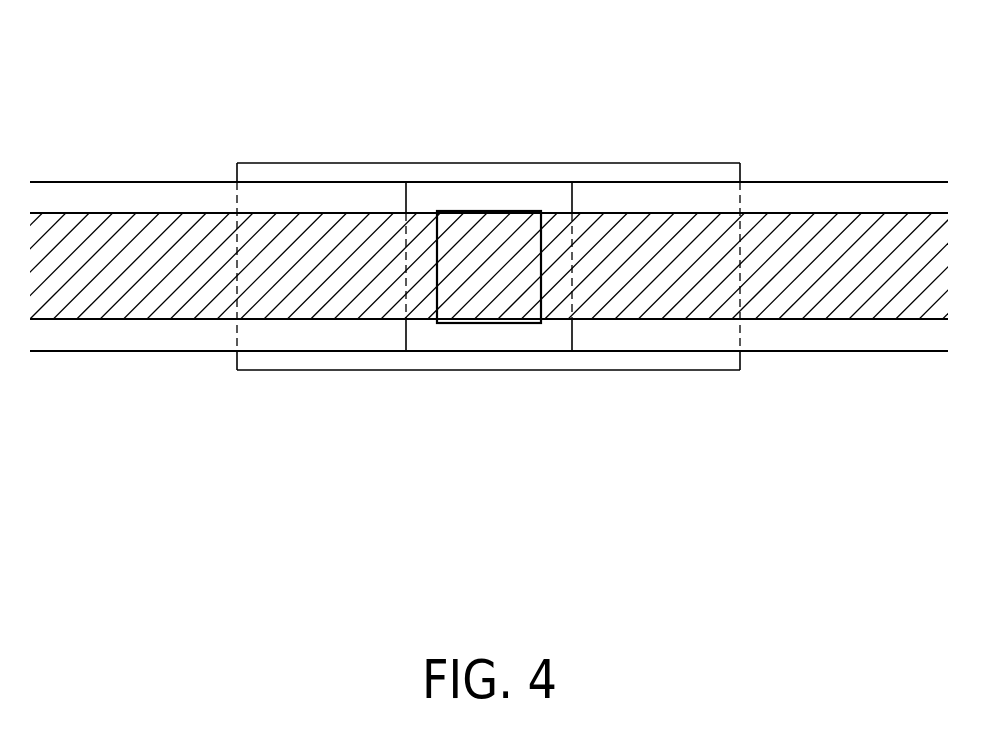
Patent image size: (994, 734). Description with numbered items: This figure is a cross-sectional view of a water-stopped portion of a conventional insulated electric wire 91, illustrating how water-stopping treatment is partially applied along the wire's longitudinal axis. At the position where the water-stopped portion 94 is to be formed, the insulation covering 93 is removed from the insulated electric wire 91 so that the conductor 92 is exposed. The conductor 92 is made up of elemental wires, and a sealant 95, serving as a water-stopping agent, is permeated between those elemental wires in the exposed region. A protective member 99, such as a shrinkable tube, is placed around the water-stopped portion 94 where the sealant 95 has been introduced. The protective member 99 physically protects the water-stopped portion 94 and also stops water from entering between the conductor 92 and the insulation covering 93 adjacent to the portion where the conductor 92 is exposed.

The insulated electric wire 91 is at (497, 252).
The conductor 92 is at (855, 305).
The insulation covering 93 is at (763, 340).
The water-stopped portion 94 is at (475, 332).
The sealant 95 is at (488, 323).
The protective member 99 is at (527, 172).